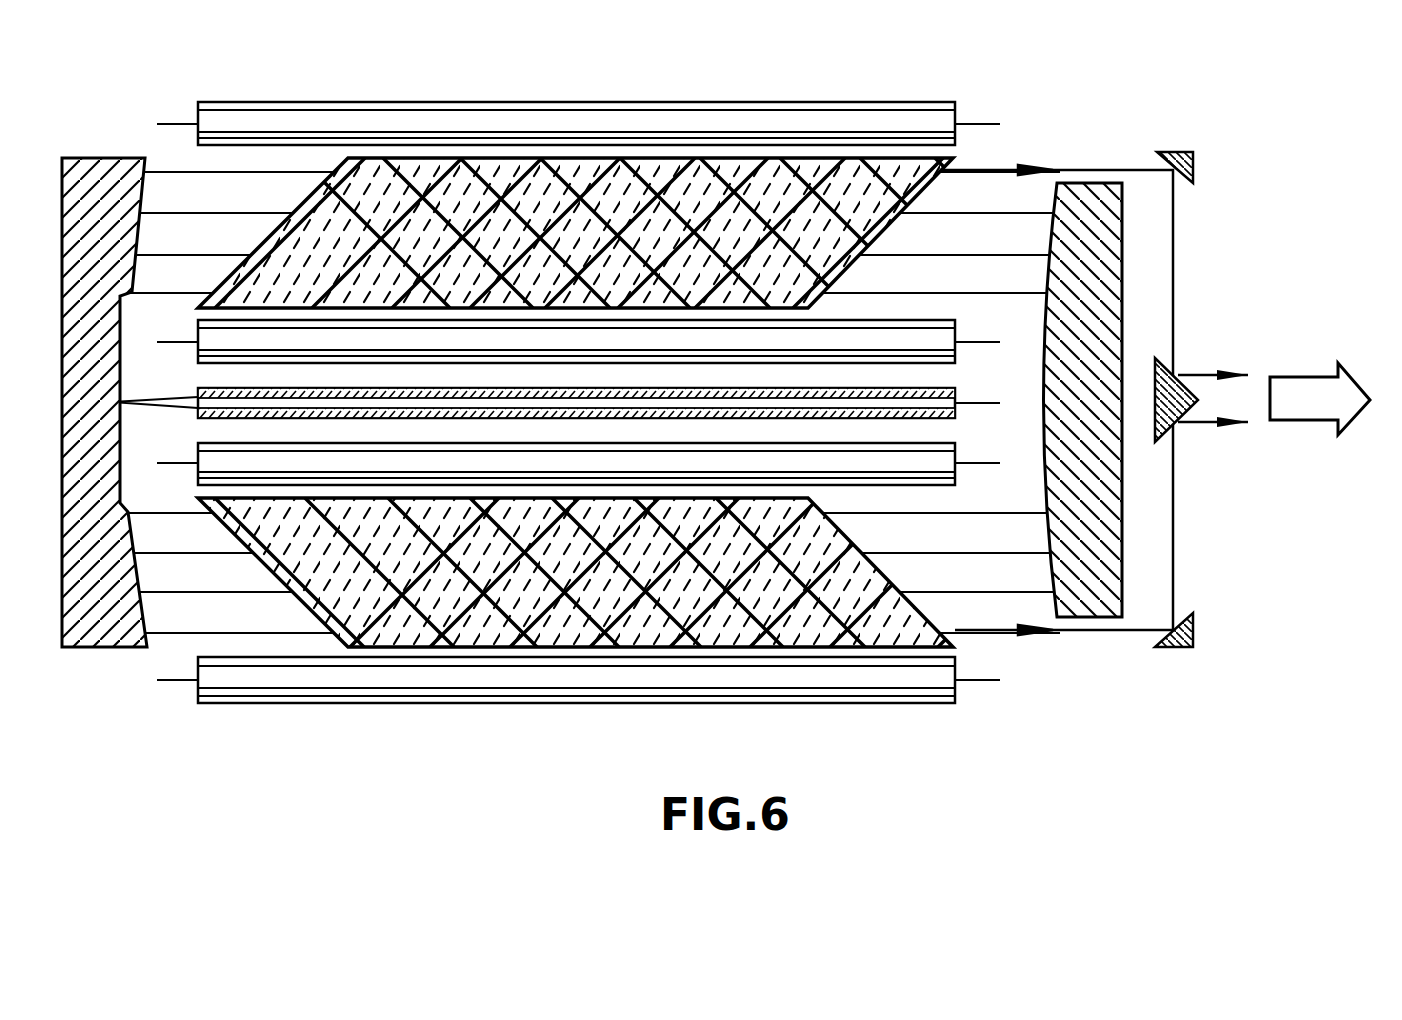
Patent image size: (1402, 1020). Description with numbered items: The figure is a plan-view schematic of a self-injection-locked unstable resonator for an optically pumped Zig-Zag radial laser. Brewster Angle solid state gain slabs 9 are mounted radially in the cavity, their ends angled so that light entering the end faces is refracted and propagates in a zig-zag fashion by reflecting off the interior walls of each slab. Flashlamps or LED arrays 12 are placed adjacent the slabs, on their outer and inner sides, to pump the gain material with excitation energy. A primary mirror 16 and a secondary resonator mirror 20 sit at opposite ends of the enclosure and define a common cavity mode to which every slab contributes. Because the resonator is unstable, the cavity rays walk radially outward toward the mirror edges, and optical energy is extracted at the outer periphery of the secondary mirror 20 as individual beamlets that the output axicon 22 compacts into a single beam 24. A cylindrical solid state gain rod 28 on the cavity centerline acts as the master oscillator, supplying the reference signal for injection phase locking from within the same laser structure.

The laser crystal slab 9 is at (763, 202).
The flashlamps 12 is at (452, 93).
The primary mirror 16 is at (102, 670).
The secondary resonator mirror 20 is at (1083, 638).
The output axicon 22 is at (1187, 437).
The single beam 24 is at (1287, 372).
The cylindrical solid state gain section (rod) 28 is at (188, 390).